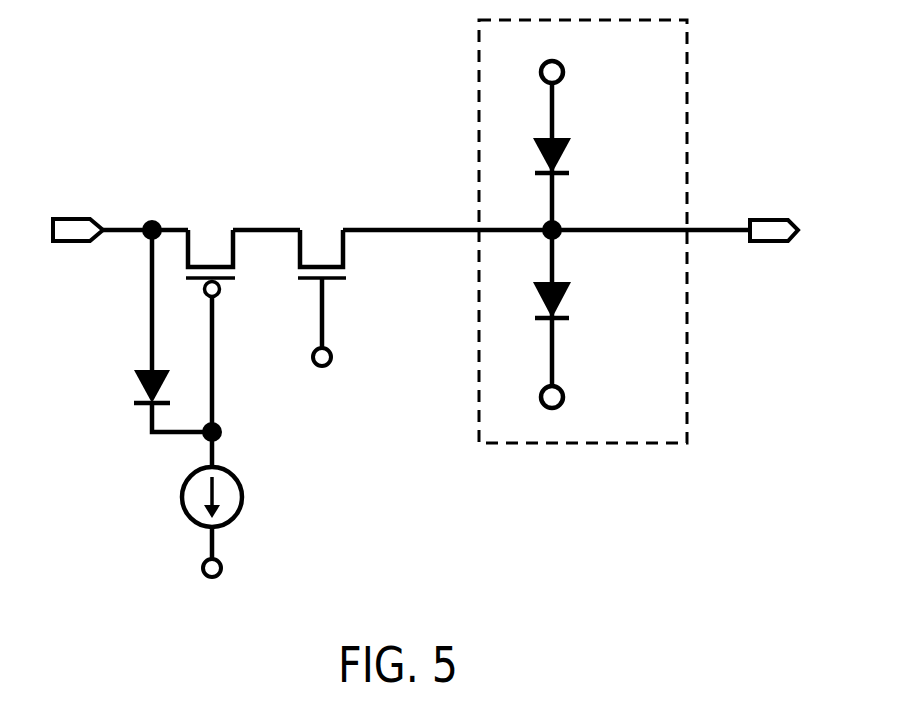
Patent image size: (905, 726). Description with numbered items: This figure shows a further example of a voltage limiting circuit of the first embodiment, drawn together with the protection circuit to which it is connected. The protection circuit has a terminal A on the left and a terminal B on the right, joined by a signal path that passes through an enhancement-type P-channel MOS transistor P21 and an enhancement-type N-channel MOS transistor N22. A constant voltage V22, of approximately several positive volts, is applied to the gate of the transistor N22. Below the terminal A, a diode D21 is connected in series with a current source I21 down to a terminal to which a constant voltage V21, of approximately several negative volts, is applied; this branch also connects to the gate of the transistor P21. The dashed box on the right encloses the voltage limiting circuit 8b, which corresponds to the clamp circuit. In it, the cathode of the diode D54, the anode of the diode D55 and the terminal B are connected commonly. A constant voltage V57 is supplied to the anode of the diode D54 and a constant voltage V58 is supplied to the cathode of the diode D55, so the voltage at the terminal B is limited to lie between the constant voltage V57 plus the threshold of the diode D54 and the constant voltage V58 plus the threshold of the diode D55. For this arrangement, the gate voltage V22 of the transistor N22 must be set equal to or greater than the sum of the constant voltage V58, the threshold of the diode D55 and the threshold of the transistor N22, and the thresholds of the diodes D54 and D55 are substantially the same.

The terminal A is at (72, 218).
The terminal B is at (772, 218).
The transistor P21 is at (217, 235).
The transistor N22 is at (323, 228).
The constant voltage V22 is at (332, 347).
The diode D21 is at (142, 387).
The current source I21 is at (182, 505).
The constant voltage V21 is at (205, 567).
The voltage limiting circuit 8b is at (687, 97).
The constant voltage V57 is at (563, 72).
The diode D54 is at (566, 148).
The diode D55 is at (567, 298).
The constant voltage V58 is at (563, 400).